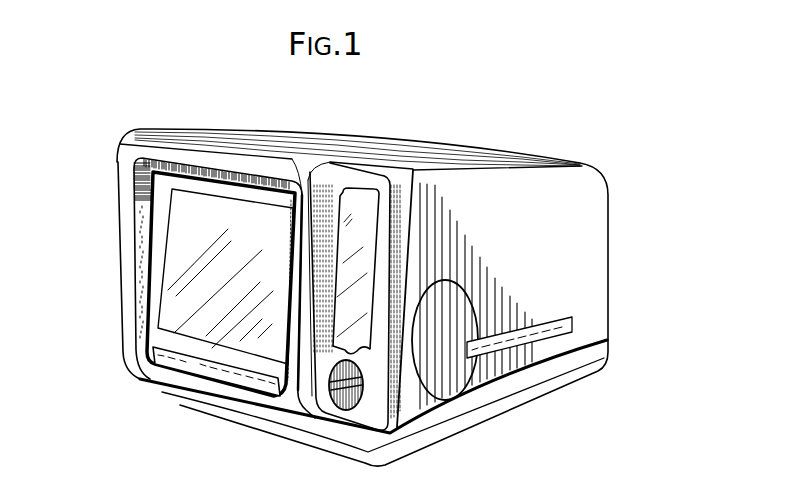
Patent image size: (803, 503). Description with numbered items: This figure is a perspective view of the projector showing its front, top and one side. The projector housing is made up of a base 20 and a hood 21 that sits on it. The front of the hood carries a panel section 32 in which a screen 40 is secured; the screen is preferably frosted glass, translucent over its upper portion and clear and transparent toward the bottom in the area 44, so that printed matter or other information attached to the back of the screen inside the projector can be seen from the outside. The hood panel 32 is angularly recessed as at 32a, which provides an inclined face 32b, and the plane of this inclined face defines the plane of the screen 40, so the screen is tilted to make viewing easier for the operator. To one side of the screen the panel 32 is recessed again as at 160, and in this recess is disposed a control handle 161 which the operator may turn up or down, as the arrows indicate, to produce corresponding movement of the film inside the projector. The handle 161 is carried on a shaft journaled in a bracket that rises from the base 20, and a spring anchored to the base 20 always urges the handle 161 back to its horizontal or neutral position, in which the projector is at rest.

The base 20 is at (597, 367).
The hood 21 is at (598, 228).
The panel section 32 is at (127, 143).
The angular recess 32a is at (147, 195).
The inclined face 32b is at (160, 257).
The screen 40 is at (246, 253).
The clear transparent portion of screen 44 is at (231, 359).
The recess 160 is at (345, 400).
The control handle 161 is at (333, 394).